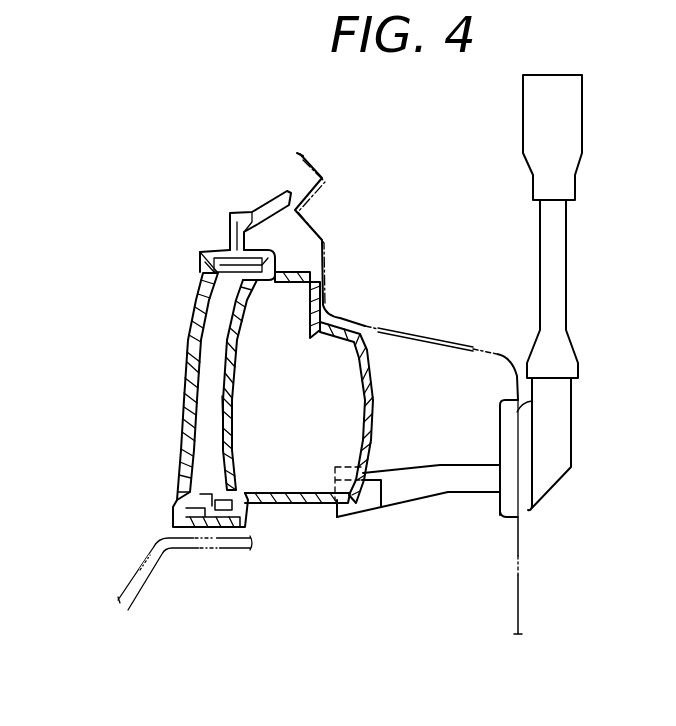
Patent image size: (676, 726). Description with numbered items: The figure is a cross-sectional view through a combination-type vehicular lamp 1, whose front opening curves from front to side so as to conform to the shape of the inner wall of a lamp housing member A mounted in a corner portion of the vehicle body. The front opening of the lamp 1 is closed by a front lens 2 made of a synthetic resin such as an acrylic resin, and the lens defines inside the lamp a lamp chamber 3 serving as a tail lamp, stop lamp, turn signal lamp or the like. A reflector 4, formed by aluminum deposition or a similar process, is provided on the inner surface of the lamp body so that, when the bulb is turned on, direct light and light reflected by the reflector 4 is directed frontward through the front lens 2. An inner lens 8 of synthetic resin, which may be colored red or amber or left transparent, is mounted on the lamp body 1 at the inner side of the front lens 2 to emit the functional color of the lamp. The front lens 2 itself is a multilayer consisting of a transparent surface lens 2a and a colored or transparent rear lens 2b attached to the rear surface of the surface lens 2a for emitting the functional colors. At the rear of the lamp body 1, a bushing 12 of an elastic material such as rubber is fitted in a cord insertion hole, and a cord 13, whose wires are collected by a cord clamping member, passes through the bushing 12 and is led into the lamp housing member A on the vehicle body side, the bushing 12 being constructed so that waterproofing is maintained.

The vehicular lamp 1 is at (371, 356).
The lamp housing member A is at (467, 360).
The front lens 2 is at (172, 348).
The transparent surface lens 2a is at (188, 314).
The rear lens 2b is at (222, 396).
The lamp chamber 3 is at (248, 453).
The reflector 4 is at (372, 384).
The inner lens 8 is at (222, 430).
The bushing 12 is at (368, 513).
The cord 13 is at (467, 497).